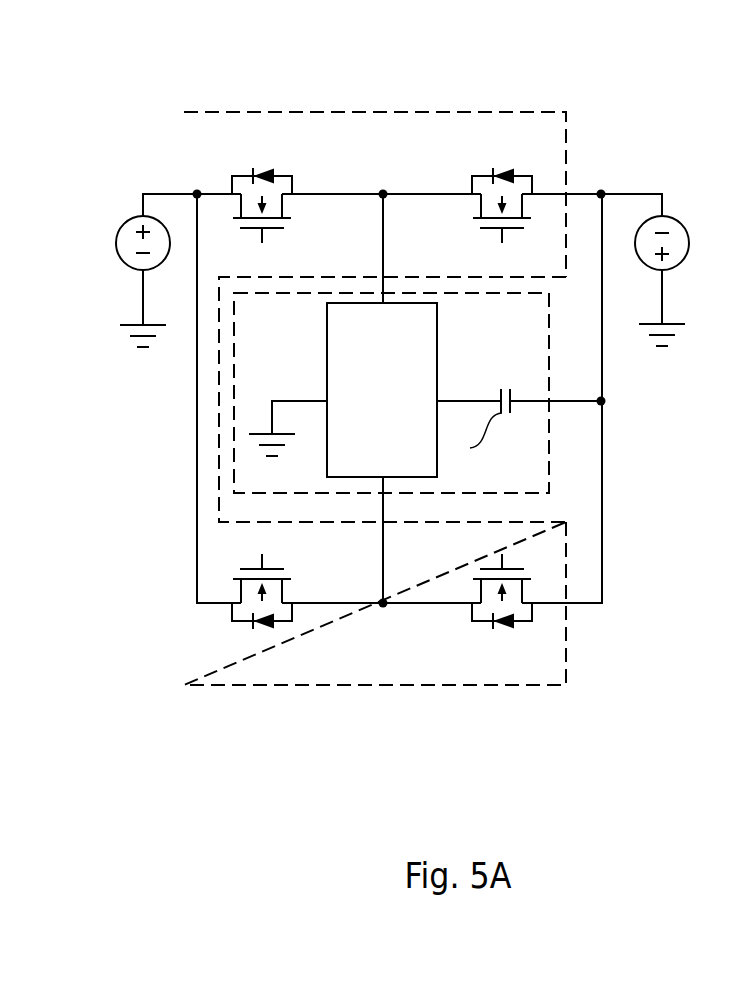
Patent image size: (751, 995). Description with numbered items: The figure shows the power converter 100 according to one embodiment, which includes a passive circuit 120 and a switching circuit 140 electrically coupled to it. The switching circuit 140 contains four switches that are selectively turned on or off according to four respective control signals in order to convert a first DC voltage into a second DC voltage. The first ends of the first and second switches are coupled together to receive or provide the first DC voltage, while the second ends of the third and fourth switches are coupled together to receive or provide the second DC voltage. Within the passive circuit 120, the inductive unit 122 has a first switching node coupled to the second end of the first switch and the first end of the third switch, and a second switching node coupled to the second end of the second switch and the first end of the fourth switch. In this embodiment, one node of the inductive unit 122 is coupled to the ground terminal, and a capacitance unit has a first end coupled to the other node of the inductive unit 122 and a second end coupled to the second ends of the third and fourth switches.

The power converter 100 is at (195, 29).
The switching circuit 140 is at (566, 140).
The passive circuit 120 is at (549, 470).
The inductive unit 122 is at (327, 313).